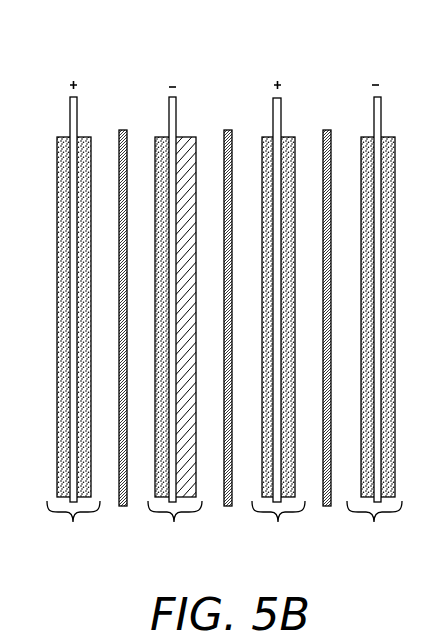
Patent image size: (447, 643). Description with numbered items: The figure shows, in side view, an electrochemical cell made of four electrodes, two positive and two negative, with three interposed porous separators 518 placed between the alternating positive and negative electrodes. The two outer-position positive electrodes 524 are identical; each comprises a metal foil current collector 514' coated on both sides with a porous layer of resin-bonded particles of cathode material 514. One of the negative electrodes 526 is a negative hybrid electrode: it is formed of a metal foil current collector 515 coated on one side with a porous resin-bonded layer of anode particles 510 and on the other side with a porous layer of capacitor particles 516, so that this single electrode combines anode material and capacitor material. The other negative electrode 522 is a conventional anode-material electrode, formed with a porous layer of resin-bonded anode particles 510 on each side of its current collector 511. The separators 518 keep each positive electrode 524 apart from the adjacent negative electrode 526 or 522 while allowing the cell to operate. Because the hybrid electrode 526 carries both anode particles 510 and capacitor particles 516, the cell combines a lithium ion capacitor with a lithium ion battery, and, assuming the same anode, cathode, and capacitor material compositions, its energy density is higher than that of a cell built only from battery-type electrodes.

The anode particles 510 is at (167, 137).
The current collector 511 is at (373, 113).
The cathode material 514 is at (163, 278).
The metal foil current collector 514' is at (191, 269).
The metal foil current collector 515 is at (176, 105).
The capacitor particles 516 is at (186, 137).
The porous separators 518 is at (124, 130).
The negative electrode 522 is at (395, 551).
The positive electrodes 524 is at (93, 551).
The negative hybrid electrode 526 is at (195, 551).